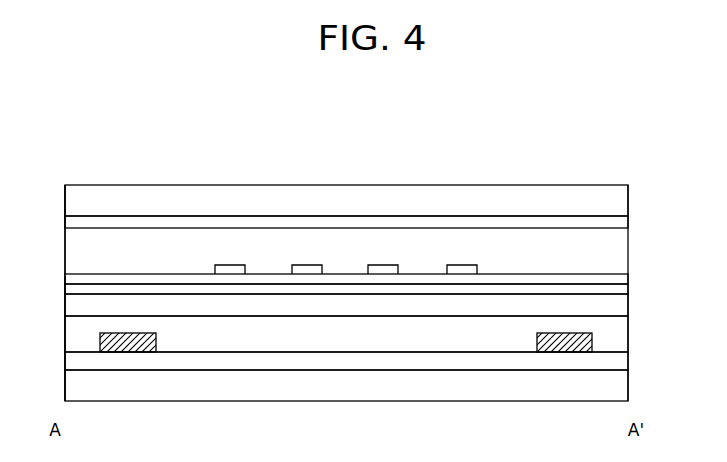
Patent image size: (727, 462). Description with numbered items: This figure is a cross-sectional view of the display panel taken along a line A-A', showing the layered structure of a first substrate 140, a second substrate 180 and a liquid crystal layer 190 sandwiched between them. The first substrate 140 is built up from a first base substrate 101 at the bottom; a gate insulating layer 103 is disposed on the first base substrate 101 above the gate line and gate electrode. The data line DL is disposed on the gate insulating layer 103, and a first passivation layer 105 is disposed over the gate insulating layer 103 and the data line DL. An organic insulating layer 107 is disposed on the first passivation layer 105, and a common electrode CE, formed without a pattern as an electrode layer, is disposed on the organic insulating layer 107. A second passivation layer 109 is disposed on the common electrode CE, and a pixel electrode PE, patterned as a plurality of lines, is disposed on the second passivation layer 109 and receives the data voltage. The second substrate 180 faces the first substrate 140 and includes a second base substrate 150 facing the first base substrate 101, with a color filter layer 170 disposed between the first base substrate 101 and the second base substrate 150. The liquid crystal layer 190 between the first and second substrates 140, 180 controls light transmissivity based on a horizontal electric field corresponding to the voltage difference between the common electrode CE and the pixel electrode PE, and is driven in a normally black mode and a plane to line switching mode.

The second base substrate 150 is at (626, 197).
The color filter layer 170 is at (626, 222).
The liquid crystal layer 190 is at (62, 217).
The second substrate 180 is at (62, 185).
The second passivation layer 109 is at (626, 276).
The common electrode CE is at (626, 285).
The organic insulating layer 107 is at (626, 305).
The first passivation layer 105 is at (626, 322).
The data line DL is at (592, 342).
The gate insulating layer 103 is at (626, 364).
The first base substrate 101 is at (626, 387).
The first substrate 140 is at (62, 276).
The pixel electrode PE is at (461, 268).